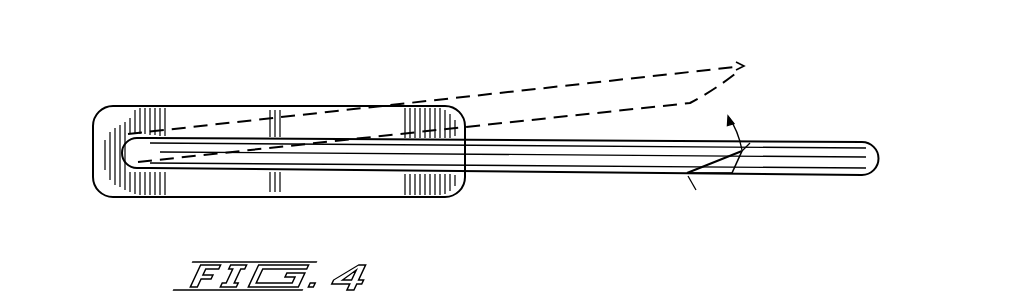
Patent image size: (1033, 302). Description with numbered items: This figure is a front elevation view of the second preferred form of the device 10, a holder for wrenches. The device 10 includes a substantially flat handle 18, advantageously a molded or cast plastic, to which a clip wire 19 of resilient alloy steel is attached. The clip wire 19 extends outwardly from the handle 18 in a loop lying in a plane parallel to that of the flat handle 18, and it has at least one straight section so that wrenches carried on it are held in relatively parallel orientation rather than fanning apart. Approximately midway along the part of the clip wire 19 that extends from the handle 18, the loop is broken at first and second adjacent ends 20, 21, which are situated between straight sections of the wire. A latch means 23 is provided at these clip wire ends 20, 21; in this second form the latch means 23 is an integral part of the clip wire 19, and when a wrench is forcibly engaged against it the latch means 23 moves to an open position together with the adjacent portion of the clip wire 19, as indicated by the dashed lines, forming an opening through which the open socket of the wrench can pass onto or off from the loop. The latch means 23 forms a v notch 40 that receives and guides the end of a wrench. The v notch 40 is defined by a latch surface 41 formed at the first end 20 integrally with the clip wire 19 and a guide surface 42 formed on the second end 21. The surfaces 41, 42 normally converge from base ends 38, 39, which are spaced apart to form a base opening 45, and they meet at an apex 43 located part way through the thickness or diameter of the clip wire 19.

The device 10 is at (514, 139).
The handle 18 is at (127, 104).
The clip wire 19 is at (500, 86).
The first end 20 is at (628, 142).
The second end 21 is at (788, 169).
The latch means 23 is at (710, 139).
The base end 38 is at (686, 175).
The base end 39 is at (728, 174).
The v notch 40 is at (705, 185).
The latch surface 41 is at (723, 148).
The guide surface 42 is at (752, 156).
The apex 43 is at (744, 150).
The base opening 45 is at (695, 176).